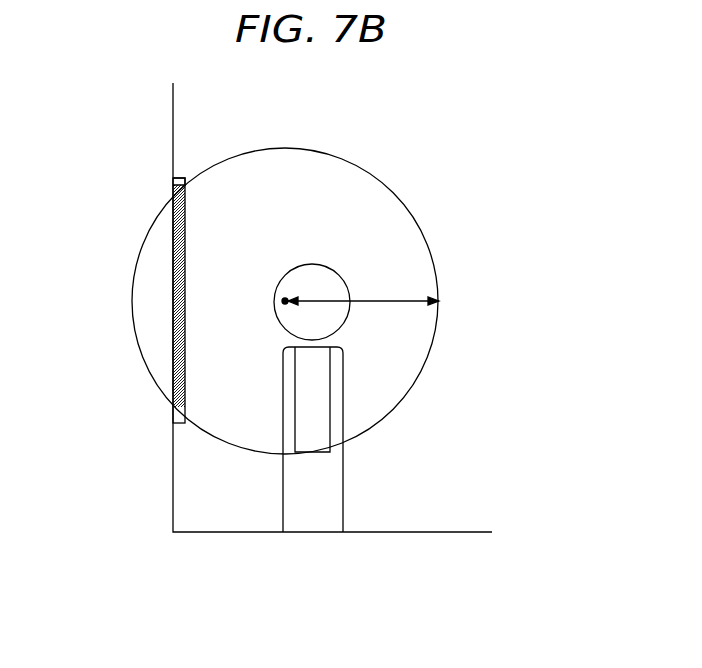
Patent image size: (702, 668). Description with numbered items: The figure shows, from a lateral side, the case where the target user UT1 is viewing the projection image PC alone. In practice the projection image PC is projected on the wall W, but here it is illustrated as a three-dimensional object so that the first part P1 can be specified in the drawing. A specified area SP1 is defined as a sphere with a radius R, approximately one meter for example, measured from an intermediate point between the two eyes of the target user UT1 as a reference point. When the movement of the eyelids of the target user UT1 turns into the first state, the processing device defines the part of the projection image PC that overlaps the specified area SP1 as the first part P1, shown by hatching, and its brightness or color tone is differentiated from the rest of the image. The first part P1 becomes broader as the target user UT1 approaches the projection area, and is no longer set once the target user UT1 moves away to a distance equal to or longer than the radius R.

The wall W is at (173, 515).
The specified area SP1 is at (350, 198).
The radius R is at (356, 302).
The target user UT1 is at (315, 510).
The first part P1 is at (186, 285).
The projection image PC is at (180, 178).